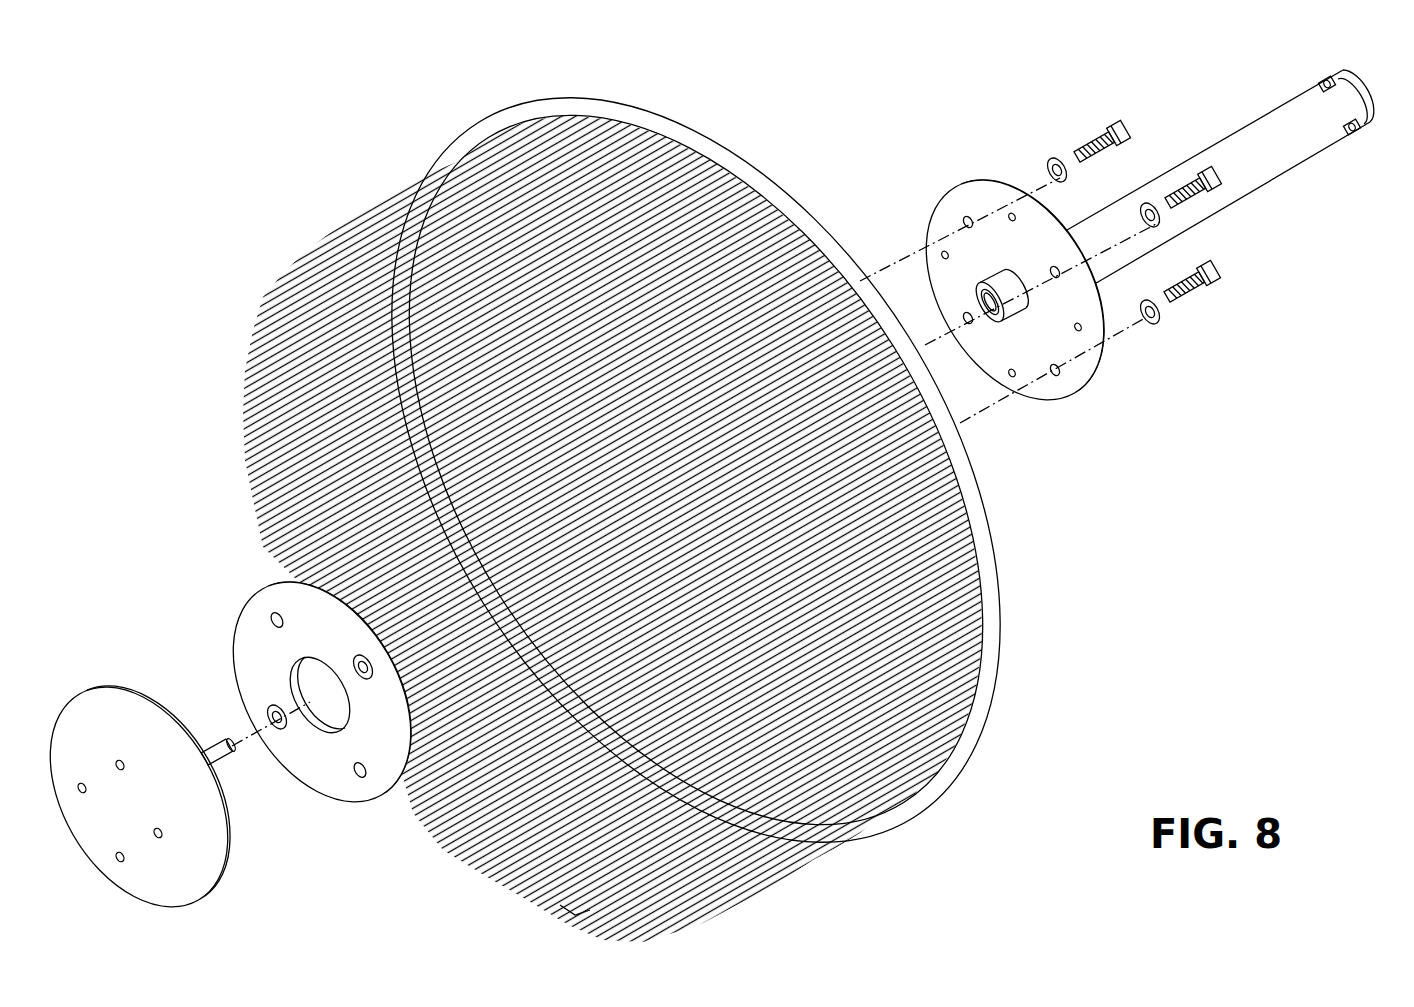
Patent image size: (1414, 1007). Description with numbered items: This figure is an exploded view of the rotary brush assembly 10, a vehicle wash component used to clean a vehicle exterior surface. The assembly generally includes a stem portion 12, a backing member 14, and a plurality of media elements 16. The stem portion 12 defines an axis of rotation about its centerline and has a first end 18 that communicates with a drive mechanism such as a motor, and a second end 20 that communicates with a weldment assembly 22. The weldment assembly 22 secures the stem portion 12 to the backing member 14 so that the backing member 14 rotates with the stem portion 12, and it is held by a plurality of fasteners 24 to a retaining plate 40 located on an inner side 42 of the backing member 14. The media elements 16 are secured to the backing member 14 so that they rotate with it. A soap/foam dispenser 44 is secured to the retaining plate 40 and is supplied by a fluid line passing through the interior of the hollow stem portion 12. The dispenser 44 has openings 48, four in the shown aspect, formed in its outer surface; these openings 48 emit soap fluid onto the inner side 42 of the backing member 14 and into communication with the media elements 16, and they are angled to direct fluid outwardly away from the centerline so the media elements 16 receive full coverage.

The rotary brush assembly 10 is at (790, 134).
The stem portion 12 is at (1233, 162).
The backing member 14 is at (970, 763).
The media elements 16 is at (574, 917).
The first end 18 is at (1376, 96).
The second end 20 is at (973, 264).
The weldment assembly 22 is at (1106, 364).
The fasteners 24 is at (1098, 148).
The retaining plate 40 is at (348, 788).
The inner side 42 is at (952, 706).
The soap/foam dispenser 44 is at (162, 788).
The openings 48 is at (106, 728).